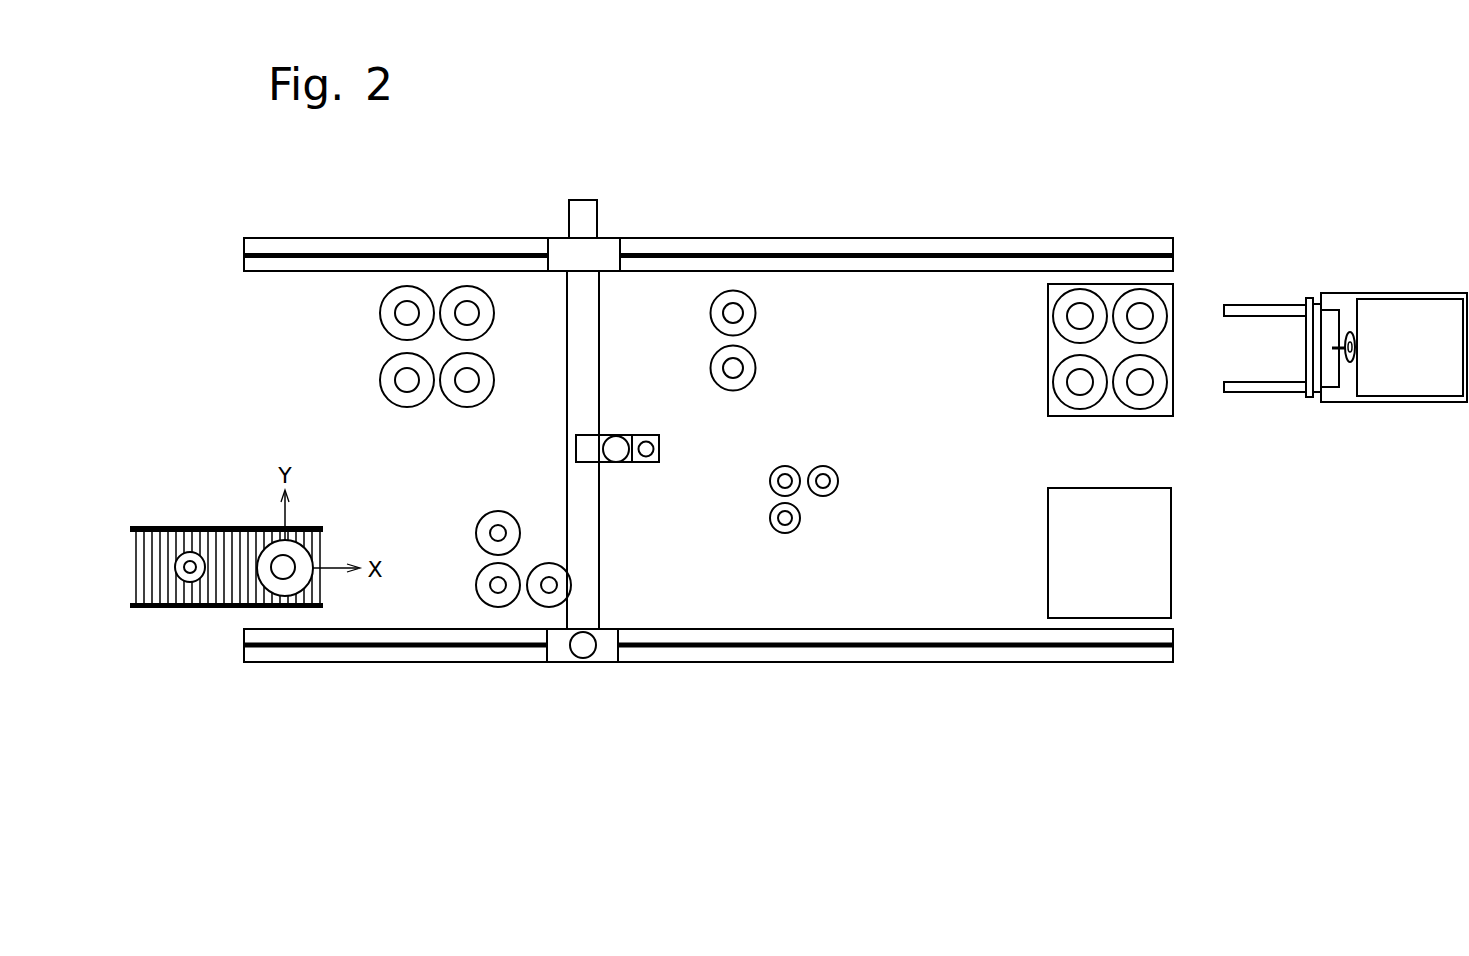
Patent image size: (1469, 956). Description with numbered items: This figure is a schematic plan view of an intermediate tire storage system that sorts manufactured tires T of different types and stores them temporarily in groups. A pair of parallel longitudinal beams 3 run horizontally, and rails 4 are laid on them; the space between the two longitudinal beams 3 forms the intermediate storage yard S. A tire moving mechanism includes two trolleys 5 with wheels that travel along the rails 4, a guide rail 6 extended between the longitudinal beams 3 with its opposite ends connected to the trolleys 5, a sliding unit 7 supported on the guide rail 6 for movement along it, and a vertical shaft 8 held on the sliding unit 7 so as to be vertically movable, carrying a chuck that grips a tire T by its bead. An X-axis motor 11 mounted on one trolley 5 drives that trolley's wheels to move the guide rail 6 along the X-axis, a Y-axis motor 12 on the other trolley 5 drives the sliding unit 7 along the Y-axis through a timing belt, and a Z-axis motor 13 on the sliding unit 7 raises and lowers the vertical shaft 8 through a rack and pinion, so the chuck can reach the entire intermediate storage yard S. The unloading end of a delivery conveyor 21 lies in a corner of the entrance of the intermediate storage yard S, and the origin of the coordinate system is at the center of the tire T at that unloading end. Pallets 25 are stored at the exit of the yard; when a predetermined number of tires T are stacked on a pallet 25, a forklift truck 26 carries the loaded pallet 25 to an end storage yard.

The longitudinal beam 3 is at (780, 237).
The rail 4 is at (895, 252).
The trolley 5 is at (562, 248).
The guide rail 6 is at (590, 368).
The sliding unit 7 is at (590, 452).
The vertical shaft 8 is at (649, 456).
The X-axis motor 11 is at (598, 213).
The Y-axis motor 12 is at (584, 655).
The Z-axis motor 13 is at (617, 439).
The delivery conveyor 21 is at (178, 526).
The pallet 25 is at (1046, 403).
The forklift truck 26 is at (1326, 278).
The intermediate storage yard S is at (738, 457).
The tire T is at (378, 370).